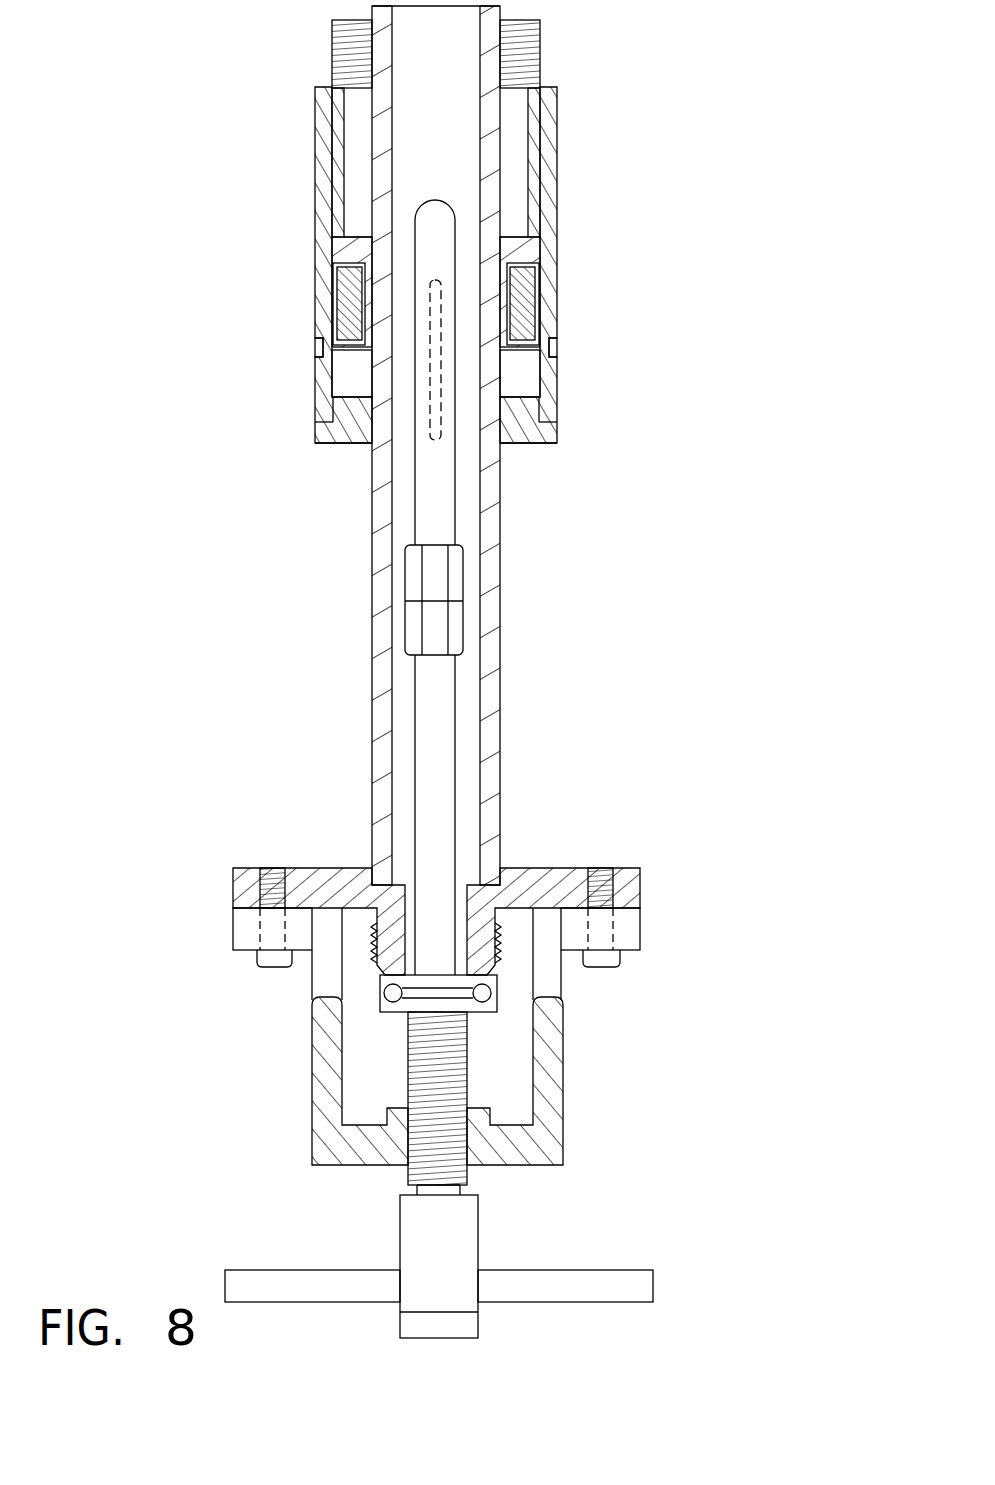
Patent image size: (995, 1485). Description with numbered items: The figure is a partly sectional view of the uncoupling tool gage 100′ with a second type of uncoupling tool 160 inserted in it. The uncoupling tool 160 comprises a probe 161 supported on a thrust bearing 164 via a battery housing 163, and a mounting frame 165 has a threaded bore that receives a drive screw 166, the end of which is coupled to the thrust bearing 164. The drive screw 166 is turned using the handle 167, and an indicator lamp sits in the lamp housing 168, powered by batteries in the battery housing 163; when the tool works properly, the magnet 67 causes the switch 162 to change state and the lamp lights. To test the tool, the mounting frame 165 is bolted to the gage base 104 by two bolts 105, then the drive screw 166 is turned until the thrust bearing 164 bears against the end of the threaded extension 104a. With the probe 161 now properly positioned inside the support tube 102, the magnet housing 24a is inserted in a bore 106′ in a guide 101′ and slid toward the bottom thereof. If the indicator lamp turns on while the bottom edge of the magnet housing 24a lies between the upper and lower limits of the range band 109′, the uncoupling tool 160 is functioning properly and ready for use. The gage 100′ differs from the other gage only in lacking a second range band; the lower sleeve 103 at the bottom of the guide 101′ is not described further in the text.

The magnet housing 24a is at (530, 128).
The guide 101′ is at (647, 179).
The magnet 67 is at (528, 290).
The range band 109′ is at (318, 352).
The bore 106′ is at (340, 383).
The switch 162 is at (436, 368).
The probe 161 is at (440, 232).
The lower sleeve 103 is at (355, 445).
The support tube 102 is at (505, 517).
The gage 100′ is at (318, 758).
The battery housing 163 is at (458, 727).
The gage base 104 is at (637, 885).
The bolts 105 is at (278, 963).
The threaded extension 104a is at (505, 945).
The thrust bearing 164 is at (378, 994).
The drive screw 166 is at (468, 1048).
The uncoupling tool 160 is at (613, 1124).
The mounting frame 165 is at (320, 1107).
The handle 167 is at (605, 1270).
The lamp housing 168 is at (478, 1322).